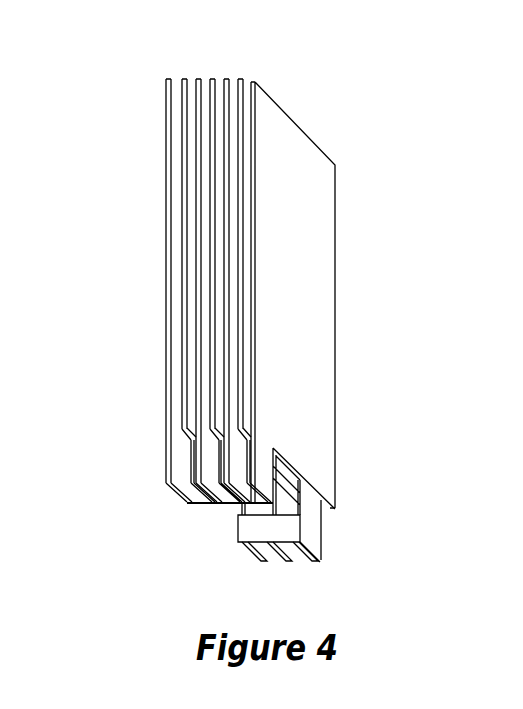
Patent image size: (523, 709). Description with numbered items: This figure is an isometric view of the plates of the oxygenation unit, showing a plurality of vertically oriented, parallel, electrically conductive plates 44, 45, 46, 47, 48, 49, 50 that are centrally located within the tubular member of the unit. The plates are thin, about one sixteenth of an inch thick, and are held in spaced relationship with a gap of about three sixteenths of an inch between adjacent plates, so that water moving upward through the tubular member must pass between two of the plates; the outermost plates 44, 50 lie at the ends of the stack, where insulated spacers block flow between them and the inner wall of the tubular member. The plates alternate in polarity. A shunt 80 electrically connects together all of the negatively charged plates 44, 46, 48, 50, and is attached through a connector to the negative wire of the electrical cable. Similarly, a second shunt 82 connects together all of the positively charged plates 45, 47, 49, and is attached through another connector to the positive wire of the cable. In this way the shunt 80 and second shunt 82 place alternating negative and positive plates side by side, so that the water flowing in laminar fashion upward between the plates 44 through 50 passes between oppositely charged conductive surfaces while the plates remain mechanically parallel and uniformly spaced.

The electrically conductive plate 44 is at (255, 78).
The electrically conductive plate 45 is at (245, 78).
The electrically conductive plate 46 is at (225, 78).
The electrically conductive plate 47 is at (213, 78).
The electrically conductive plate 48 is at (197, 77).
The electrically conductive plate 49 is at (182, 78).
The electrically conductive plate 50 is at (167, 80).
The shunt 80 is at (192, 503).
The second shunt 82 is at (282, 533).